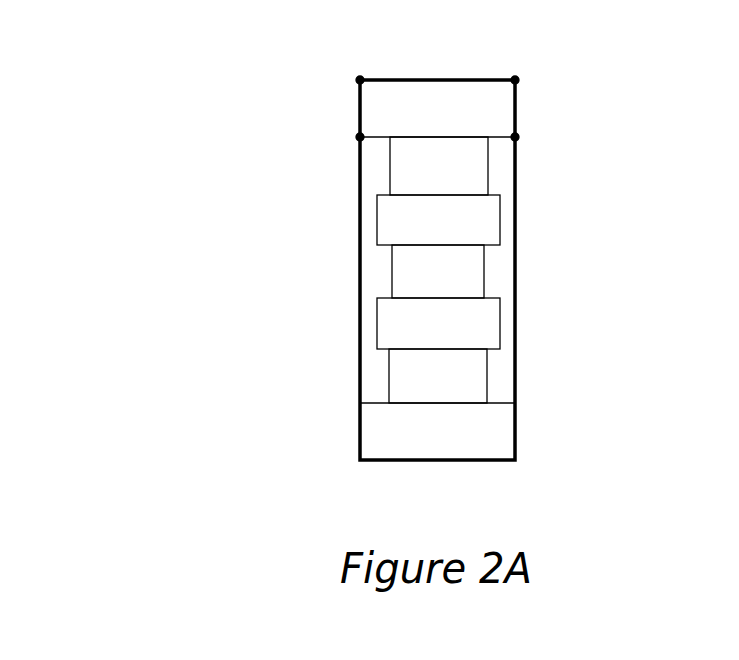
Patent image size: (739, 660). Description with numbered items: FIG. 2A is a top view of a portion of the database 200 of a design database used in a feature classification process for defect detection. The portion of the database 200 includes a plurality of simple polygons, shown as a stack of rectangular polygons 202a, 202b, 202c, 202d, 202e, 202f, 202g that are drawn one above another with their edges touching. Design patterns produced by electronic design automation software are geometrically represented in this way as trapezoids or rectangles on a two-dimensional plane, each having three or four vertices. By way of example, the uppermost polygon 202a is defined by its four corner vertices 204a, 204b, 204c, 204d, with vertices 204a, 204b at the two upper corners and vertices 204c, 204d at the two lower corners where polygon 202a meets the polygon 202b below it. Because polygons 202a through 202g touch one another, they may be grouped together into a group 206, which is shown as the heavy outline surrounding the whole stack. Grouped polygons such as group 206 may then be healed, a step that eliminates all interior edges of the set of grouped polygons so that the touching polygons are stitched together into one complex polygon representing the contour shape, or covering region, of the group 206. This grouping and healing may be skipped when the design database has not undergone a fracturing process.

The portion of the database 200 is at (150, 104).
The rectangular polygon 202a is at (460, 120).
The rectangular polygon 202b is at (459, 180).
The rectangular polygon 202c is at (459, 230).
The rectangular polygon 202d is at (459, 283).
The rectangular polygon 202e is at (459, 336).
The rectangular polygon 202f is at (457, 389).
The rectangular polygon 202g is at (460, 444).
The vertex 204a is at (360, 80).
The vertex 204b is at (515, 80).
The vertex 204c is at (360, 137).
The vertex 204d is at (515, 137).
The group 206 is at (360, 220).